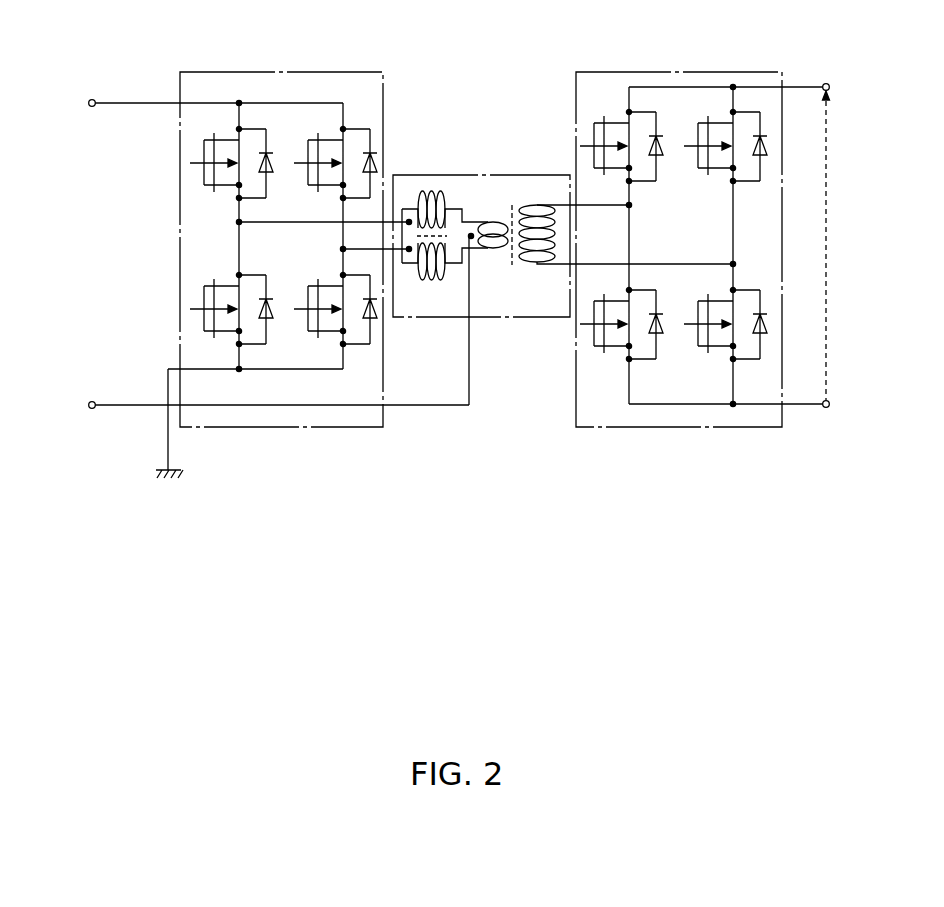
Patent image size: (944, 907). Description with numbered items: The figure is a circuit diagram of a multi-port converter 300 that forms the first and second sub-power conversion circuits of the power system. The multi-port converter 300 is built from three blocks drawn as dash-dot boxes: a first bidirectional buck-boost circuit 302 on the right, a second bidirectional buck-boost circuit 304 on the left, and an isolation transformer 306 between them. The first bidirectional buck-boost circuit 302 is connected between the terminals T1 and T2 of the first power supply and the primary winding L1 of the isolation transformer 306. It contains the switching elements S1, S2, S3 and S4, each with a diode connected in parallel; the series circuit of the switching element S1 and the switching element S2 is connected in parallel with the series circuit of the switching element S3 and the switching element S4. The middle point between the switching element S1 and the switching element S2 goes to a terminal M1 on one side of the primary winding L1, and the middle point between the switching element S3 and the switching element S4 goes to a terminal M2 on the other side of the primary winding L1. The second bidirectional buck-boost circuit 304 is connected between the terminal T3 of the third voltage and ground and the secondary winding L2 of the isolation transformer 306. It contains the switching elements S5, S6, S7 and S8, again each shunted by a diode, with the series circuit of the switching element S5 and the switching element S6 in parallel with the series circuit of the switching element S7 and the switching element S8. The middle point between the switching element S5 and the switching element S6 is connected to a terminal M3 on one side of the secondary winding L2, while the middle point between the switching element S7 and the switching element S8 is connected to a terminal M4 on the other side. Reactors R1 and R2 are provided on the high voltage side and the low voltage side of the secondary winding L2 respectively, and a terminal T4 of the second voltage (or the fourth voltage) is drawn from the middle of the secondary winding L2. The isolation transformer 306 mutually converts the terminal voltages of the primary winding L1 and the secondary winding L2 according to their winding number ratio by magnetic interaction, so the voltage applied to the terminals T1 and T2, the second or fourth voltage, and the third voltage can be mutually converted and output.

The multi-port converter 300 is at (506, 573).
The first bidirectional buck-boost circuit 302 is at (741, 72).
The second bidirectional buck-boost circuit 304 is at (352, 72).
The isolation transformer 306 is at (527, 175).
The switching element S1 is at (621, 139).
The switching element S2 is at (621, 317).
The switching element S3 is at (725, 139).
The switching element S4 is at (725, 317).
The switching element S5 is at (231, 156).
The switching element S6 is at (231, 302).
The switching element S7 is at (335, 156).
The switching element S8 is at (335, 302).
The terminal M1 is at (644, 207).
The terminal M2 is at (747, 267).
The terminal M3 is at (308, 223).
The terminal M4 is at (360, 252).
The primary winding L1 is at (626, 248).
The secondary winding L2 is at (488, 313).
The reactor R1 is at (426, 205).
The reactor R2 is at (426, 270).
The terminal T1 is at (781, 79).
The terminal T2 is at (781, 413).
The terminal T3 is at (164, 96).
The terminal T4 is at (279, 398).